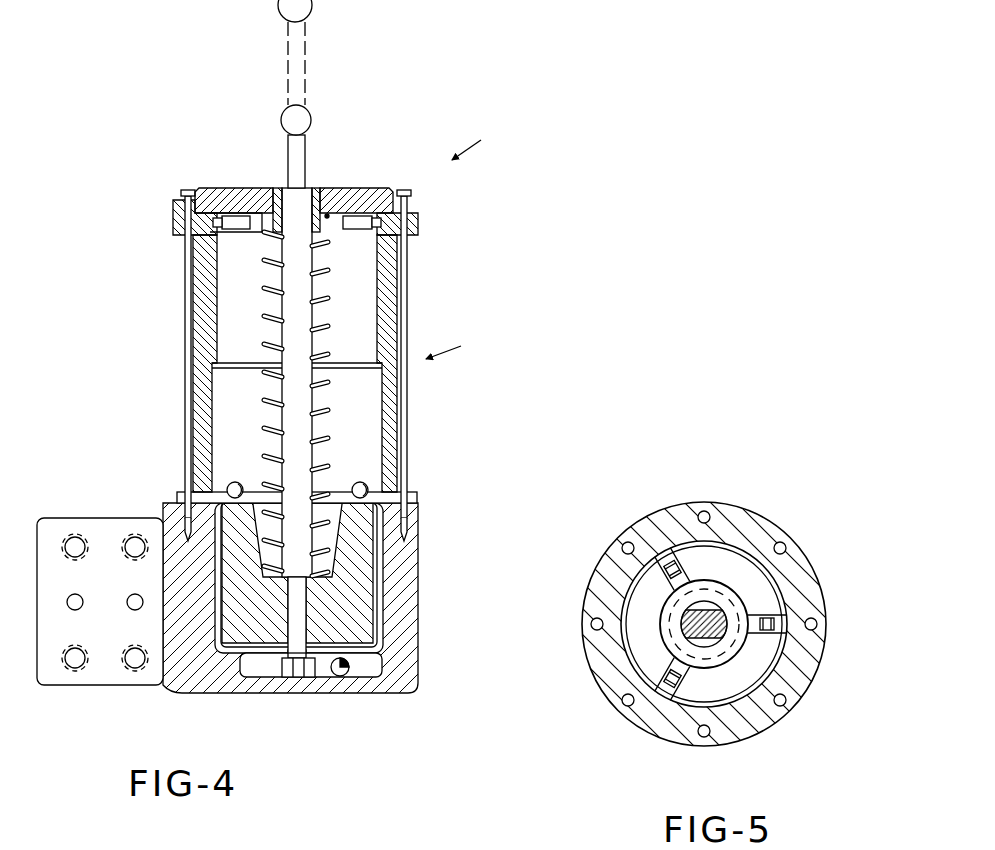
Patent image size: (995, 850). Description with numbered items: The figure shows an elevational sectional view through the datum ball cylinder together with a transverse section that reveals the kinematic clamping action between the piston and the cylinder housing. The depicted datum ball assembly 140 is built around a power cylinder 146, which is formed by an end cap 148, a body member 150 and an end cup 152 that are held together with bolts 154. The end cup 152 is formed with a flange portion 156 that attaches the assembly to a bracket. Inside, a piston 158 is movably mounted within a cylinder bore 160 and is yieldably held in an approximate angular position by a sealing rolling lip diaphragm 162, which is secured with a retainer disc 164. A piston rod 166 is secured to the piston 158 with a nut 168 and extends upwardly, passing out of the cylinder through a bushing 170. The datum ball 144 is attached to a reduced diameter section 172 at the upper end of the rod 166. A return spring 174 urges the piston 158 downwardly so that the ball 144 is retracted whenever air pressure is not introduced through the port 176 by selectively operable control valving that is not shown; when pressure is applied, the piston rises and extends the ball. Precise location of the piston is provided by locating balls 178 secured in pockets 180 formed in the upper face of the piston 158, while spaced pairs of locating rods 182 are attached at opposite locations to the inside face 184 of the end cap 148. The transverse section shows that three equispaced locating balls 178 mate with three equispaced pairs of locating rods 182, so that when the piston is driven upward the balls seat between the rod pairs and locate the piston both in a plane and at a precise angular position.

In FIG. 4, the datum ball assembly 140 is at (477, 139).
In FIG. 4, the datum ball 144 is at (313, 12).
In FIG. 4, the power cylinder 146 is at (453, 358).
In FIG. 4, the end cap 148 is at (238, 205).
In FIG. 4, the body member 150 is at (194, 322).
In FIG. 4, the end cup 152 is at (180, 515).
In FIG. 4, the bolts 154 is at (186, 276).
In FIG. 5, the bolts 154 is at (626, 546).
In FIG. 4, the flange portion 156 is at (58, 675).
In FIG. 4, the piston 158 is at (215, 583).
In FIG. 4, the cylinder bore 160 is at (221, 408).
In FIG. 4, the sealing rolling lip diaphragm 162 is at (215, 493).
In FIG. 4, the retainer disc 164 is at (243, 680).
In FIG. 4, the piston rod 166 is at (287, 385).
In FIG. 5, the piston rod 166 is at (690, 625).
In FIG. 4, the nut 168 is at (298, 680).
In FIG. 4, the bushing 170 is at (345, 188).
In FIG. 4, the reduced diameter section 172 is at (306, 168).
In FIG. 4, the return spring 174 is at (332, 326).
In FIG. 5, the return spring 174 is at (722, 584).
In FIG. 4, the port 176 is at (360, 672).
In FIG. 4, the locating balls 178 is at (212, 474).
In FIG. 5, the locating balls 178 is at (680, 586).
In FIG. 4, the pockets 180 is at (236, 482).
In FIG. 4, the locating rods 182 is at (230, 218).
In FIG. 5, the locating rods 182 is at (671, 580).
In FIG. 4, the inside face 184 is at (325, 230).